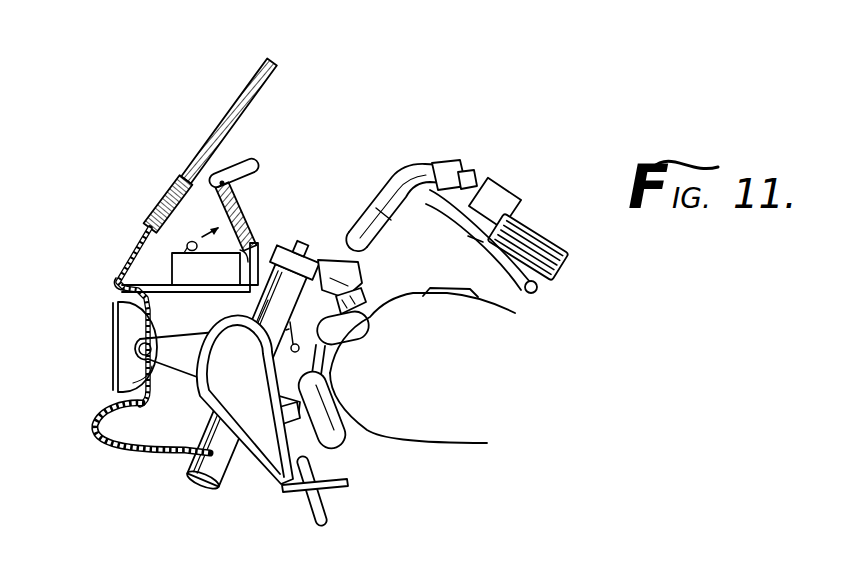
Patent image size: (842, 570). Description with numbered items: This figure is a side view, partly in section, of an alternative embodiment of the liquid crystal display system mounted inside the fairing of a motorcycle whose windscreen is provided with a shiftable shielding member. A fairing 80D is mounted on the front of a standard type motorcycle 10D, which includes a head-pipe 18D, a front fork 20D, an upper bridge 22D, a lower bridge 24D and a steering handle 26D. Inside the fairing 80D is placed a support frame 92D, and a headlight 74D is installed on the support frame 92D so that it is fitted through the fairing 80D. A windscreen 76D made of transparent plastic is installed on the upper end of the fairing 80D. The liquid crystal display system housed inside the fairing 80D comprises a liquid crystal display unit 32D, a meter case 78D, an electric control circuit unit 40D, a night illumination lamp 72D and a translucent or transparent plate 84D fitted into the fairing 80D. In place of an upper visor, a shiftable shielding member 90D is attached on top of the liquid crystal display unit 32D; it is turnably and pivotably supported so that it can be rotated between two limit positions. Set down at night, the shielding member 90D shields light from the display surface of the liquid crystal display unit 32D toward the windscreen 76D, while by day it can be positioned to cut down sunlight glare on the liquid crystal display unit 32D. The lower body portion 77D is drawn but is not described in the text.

The motorcycle 10D is at (391, 280).
The head-pipe 18D is at (322, 355).
The front fork 20D is at (195, 470).
The upper bridge 22D is at (318, 255).
The lower bridge 24D is at (222, 386).
The steering handle 26D is at (413, 168).
The liquid crystal display unit 32D is at (240, 202).
The electric control circuit unit 40D is at (178, 268).
The night illumination lamp 72D is at (226, 221).
The headlight 74D is at (112, 333).
The windscreen 76D is at (252, 92).
The body lower portion 77D is at (433, 443).
The meter case 78D is at (180, 288).
The fairing 80D is at (118, 274).
The translucent or transparent plate 84D is at (168, 198).
The shiftable shielding member 90D is at (246, 176).
The support frame 92D is at (250, 458).